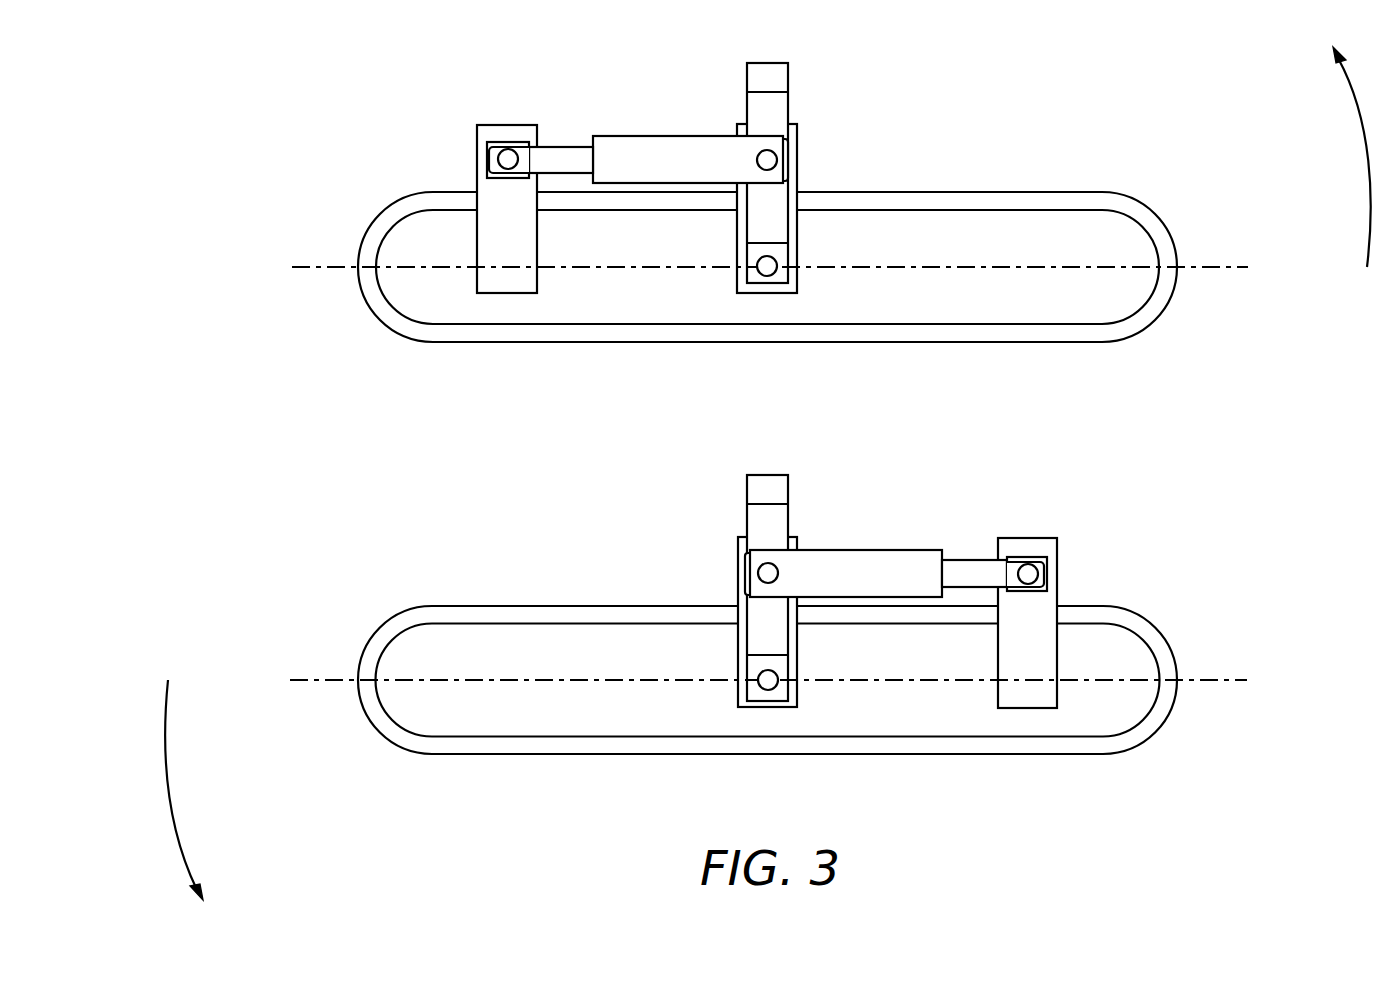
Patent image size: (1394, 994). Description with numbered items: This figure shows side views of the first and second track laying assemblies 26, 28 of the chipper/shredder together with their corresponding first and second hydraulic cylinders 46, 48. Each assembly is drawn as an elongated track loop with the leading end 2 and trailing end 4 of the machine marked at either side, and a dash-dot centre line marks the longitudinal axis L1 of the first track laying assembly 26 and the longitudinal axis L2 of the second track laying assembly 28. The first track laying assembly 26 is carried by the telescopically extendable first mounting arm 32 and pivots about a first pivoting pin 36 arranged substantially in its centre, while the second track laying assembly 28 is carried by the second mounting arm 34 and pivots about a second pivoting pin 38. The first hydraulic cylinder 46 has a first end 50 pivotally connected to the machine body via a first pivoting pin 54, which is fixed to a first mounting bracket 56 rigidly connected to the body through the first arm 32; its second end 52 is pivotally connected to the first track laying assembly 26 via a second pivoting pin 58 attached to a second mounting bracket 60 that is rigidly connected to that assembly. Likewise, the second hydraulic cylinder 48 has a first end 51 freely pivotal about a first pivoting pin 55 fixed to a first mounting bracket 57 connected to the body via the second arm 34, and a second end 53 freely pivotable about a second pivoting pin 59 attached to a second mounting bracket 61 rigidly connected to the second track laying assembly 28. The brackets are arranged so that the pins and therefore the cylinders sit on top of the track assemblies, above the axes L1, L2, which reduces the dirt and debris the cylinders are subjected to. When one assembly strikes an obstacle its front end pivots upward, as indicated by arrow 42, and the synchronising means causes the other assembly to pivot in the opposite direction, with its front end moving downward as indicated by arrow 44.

The first track laying assembly 26 is at (1133, 678).
The second track laying assembly 28 is at (1133, 265).
The first mounting arm 32 is at (757, 519).
The second mounting arm 34 is at (780, 108).
The first pivoting pin 36 is at (768, 691).
The second pivoting pin 38 is at (767, 277).
The arrow 42 is at (1360, 124).
The arrow 44 is at (178, 820).
The first hydraulic cylinder 46 is at (918, 553).
The second hydraulic cylinder 48 is at (617, 140).
The first end of first hydraulic cylinder 50 is at (750, 578).
The first end of second hydraulic cylinder 51 is at (789, 171).
The second end of first hydraulic cylinder 52 is at (1047, 576).
The second end of second hydraulic cylinder 53 is at (488, 158).
The first pivoting pin 54 is at (779, 573).
The first pivoting pin 55 is at (757, 159).
The first mounting bracket 56 is at (746, 641).
The first mounting bracket 57 is at (790, 232).
The second pivoting pin 58 is at (1028, 564).
The second pivoting pin 59 is at (508, 150).
The second mounting bracket 60 is at (1006, 649).
The second mounting bracket 61 is at (529, 238).
The leading end 2 is at (276, 694).
The trailing end 4 is at (277, 279).
The longitudinal axis L1 is at (1200, 683).
The longitudinal axis L2 is at (1200, 269).